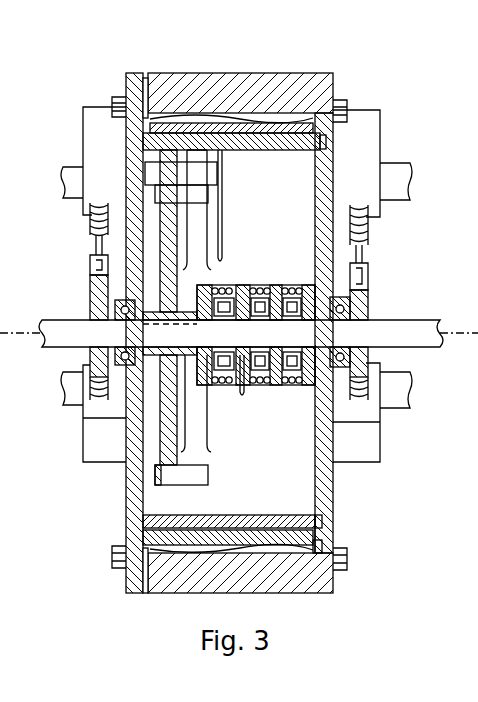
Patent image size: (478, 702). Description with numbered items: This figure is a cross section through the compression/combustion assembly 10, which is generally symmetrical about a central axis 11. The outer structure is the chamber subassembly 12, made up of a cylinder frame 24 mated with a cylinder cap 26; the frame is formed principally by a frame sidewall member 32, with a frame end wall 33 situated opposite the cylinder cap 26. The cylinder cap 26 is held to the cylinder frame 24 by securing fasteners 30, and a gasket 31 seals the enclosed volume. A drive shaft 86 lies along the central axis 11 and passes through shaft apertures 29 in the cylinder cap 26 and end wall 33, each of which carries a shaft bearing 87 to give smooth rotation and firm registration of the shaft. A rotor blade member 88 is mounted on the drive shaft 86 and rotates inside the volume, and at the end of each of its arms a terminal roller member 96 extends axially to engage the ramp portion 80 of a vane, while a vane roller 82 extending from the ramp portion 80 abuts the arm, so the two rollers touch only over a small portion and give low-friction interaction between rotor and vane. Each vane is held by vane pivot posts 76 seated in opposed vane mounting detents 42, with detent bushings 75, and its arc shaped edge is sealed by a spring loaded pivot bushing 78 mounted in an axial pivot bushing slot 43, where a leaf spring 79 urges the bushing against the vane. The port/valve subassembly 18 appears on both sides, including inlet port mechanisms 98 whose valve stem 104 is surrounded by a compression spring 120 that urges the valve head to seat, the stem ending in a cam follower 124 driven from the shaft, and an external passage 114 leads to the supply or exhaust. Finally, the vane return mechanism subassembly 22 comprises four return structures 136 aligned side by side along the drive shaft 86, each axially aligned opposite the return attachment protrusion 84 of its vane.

The compression/combustion assembly 10 is at (238, 74).
The central axis 11 is at (441, 327).
The chamber subassembly 12 is at (227, 312).
The port/valve subassembly 18 is at (80, 150).
The vane return mechanism subassembly 22 is at (268, 392).
The cylinder frame 24 is at (245, 80).
The cylinder cap 26 is at (129, 487).
The shaft aperture 29 is at (296, 302).
The securing fasteners 30 is at (116, 96).
The gasket 31 is at (153, 100).
The frame sidewall member 32 is at (302, 86).
The frame end wall 33 is at (326, 478).
The vane mounting detents 42 is at (323, 506).
The axial pivot bushing slot 43 is at (305, 553).
The detent bushings 75 is at (328, 140).
The vane pivot posts 76 is at (138, 135).
The spring loaded pivot bushing 78 is at (215, 530).
The leaf spring 79 is at (272, 118).
The ramp portion 80 is at (209, 418).
The vane roller 82 is at (153, 163).
The return attachment protrusion 84 is at (223, 152).
The drive shaft 86 is at (66, 318).
The shaft bearing 87 is at (370, 300).
The rotor blade member 88 is at (187, 437).
The terminal roller member 96 is at (211, 200).
The inlet port mechanisms 98 is at (409, 178).
The valve stem 104 is at (92, 247).
The external passage 114 is at (55, 182).
The compression spring 120 is at (92, 220).
The cam follower 124 is at (371, 277).
The return structures 136 is at (286, 288).